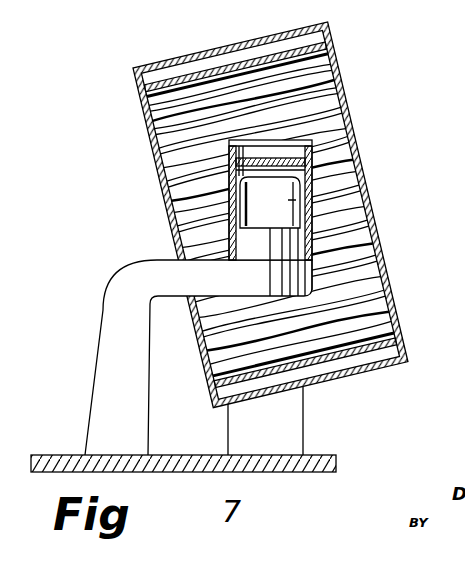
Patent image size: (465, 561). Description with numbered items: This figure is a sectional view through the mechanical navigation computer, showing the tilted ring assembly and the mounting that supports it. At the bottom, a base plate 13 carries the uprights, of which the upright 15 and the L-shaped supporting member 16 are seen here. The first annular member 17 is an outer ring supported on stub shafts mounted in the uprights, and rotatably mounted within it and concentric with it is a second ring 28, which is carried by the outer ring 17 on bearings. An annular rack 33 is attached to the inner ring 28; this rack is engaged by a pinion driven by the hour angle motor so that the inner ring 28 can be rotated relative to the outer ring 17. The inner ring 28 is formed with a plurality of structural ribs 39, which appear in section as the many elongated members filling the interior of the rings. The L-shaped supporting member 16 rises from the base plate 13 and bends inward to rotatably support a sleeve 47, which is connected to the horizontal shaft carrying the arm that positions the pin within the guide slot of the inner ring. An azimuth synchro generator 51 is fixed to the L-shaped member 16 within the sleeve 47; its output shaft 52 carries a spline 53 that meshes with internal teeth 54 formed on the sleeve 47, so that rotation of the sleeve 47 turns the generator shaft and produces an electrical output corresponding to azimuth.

The base plate 13 is at (183, 456).
The upright 15 is at (288, 432).
The L-shaped supporting member 16 is at (105, 392).
The first annular member 17 is at (312, 36).
The second ring 28 is at (326, 62).
The annular rack 33 is at (200, 78).
The structural ribs 39 is at (348, 122).
The sleeve 47 is at (232, 203).
The azimuth synchro generator 51 is at (300, 204).
The output shaft 52 is at (318, 173).
The spline 53 is at (229, 150).
The internal teeth 54 is at (314, 146).